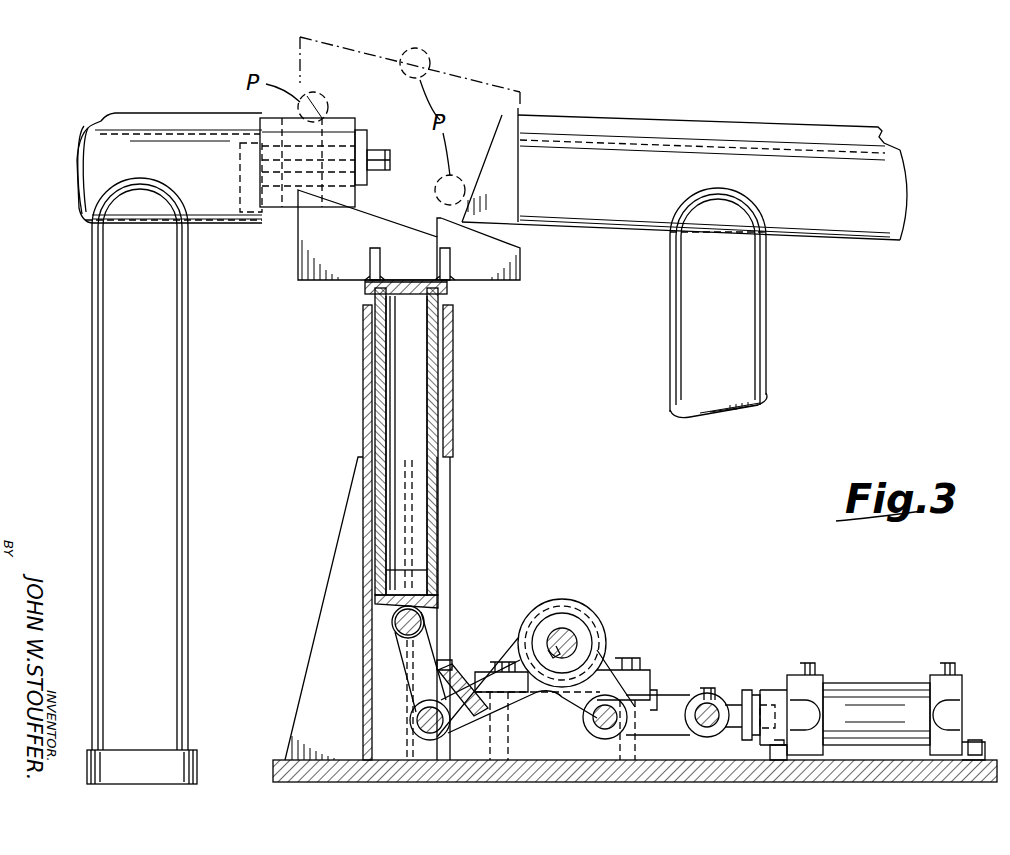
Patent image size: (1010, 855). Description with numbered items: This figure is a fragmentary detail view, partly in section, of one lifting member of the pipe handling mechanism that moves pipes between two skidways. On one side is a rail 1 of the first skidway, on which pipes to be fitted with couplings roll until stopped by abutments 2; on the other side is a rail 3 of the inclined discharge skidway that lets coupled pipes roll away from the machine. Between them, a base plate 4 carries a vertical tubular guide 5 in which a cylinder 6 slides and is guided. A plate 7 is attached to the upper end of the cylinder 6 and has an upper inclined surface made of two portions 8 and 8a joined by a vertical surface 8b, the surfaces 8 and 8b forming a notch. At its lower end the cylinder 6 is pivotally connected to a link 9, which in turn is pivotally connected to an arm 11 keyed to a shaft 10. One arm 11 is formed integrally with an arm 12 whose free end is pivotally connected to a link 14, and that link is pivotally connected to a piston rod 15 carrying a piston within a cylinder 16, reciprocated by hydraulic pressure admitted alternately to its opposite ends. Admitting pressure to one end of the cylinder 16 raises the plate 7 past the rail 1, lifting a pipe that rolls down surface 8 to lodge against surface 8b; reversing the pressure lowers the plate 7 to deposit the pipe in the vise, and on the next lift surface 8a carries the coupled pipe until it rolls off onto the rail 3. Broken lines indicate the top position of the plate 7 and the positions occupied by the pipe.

The rail 1 is at (80, 150).
The abutment 2 is at (340, 114).
The rail 3 is at (643, 196).
The base plate 4 is at (275, 762).
The vertical tubular guide 5 is at (363, 387).
The cylinder 6 is at (440, 479).
The plate 7 is at (483, 275).
The inclined surface 8 is at (372, 220).
The inclined surface 8a is at (472, 232).
The vertical surface 8b is at (438, 224).
The link 9 is at (420, 653).
The shaft 10 is at (562, 626).
The arm 11 is at (518, 640).
The arm 12 is at (612, 700).
The link 14 is at (672, 700).
The piston rod 15 is at (722, 695).
The cylinder 16 is at (862, 700).